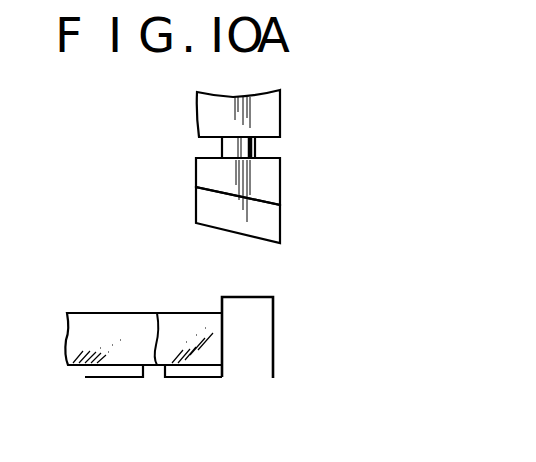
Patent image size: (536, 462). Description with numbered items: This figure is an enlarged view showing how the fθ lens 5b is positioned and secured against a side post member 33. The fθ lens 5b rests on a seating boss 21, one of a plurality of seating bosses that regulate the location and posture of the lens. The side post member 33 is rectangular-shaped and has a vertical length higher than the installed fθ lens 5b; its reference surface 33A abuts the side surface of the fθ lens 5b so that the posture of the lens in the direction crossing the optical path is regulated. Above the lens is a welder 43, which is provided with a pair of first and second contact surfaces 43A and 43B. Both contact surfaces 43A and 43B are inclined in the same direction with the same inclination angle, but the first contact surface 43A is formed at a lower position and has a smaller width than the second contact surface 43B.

The welder 43 is at (280, 177).
The first contact surface 43A is at (220, 228).
The second contact surface 43B is at (220, 192).
The fθ lens 5b is at (117, 313).
The seating boss 21 is at (153, 313).
The side post member 33 is at (274, 337).
The reference surface 33A is at (220, 352).